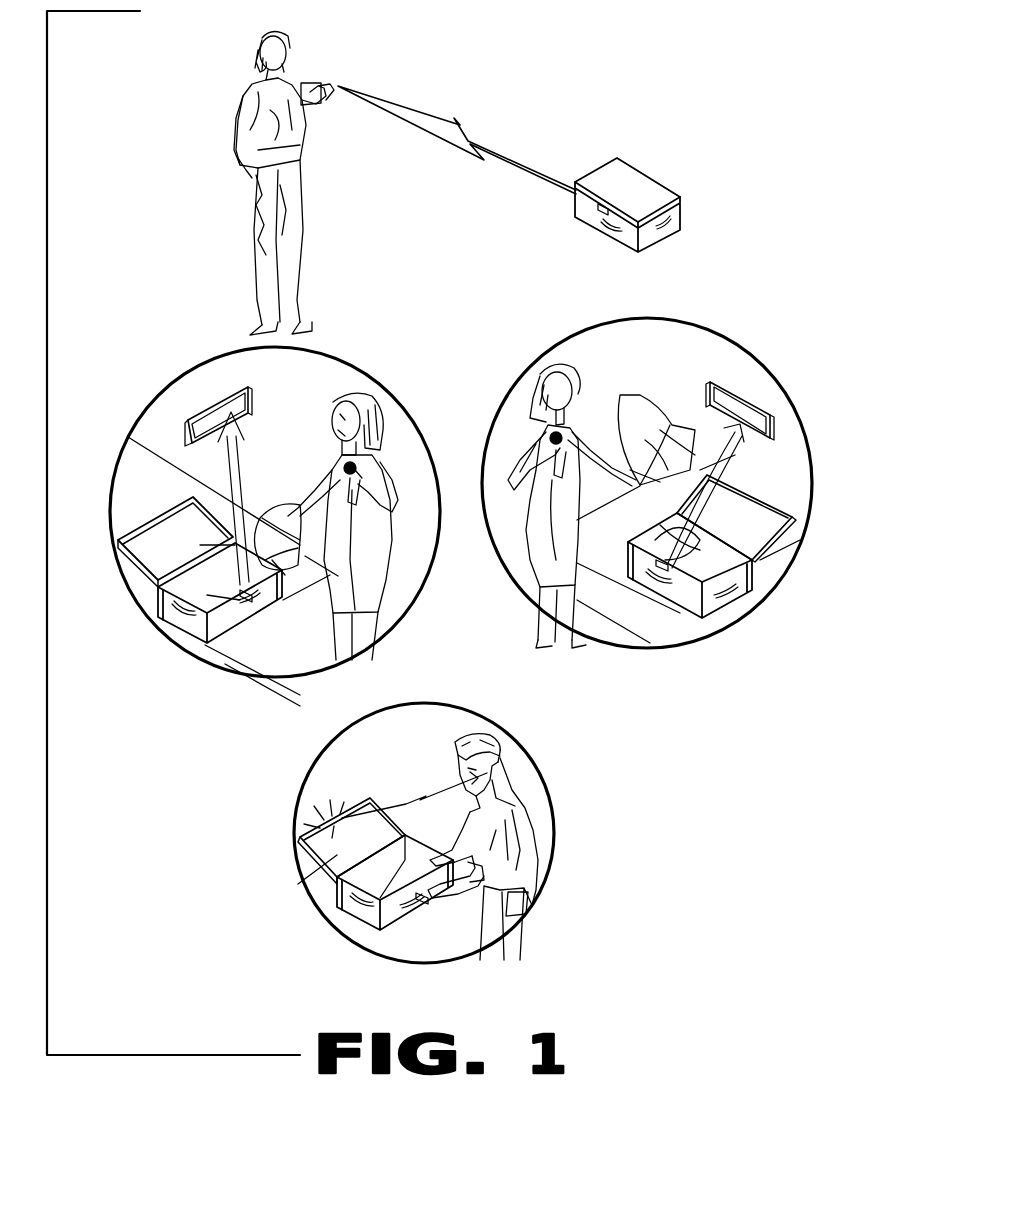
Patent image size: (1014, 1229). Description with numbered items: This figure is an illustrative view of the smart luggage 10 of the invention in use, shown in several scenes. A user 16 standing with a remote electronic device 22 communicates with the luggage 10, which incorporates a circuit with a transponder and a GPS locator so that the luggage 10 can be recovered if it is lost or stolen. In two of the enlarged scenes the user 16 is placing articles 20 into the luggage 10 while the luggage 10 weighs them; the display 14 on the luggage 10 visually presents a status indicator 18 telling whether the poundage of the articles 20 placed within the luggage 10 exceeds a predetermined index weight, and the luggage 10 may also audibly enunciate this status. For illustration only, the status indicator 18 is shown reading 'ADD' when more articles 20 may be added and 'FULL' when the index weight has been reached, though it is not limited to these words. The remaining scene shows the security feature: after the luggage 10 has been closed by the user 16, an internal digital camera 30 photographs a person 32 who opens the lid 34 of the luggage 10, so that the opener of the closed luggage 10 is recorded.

The smart luggage 10 is at (650, 118).
The display 14 is at (600, 212).
The user 16 is at (312, 200).
The status indicator 18 is at (218, 415).
The articles 20 is at (272, 520).
The remote electronic device 22 is at (326, 80).
The internal digital camera 30 is at (162, 527).
The person 32 is at (514, 790).
The lid 34 is at (606, 178).